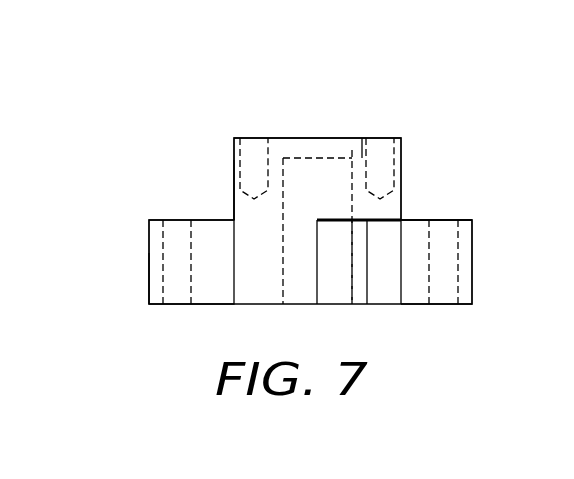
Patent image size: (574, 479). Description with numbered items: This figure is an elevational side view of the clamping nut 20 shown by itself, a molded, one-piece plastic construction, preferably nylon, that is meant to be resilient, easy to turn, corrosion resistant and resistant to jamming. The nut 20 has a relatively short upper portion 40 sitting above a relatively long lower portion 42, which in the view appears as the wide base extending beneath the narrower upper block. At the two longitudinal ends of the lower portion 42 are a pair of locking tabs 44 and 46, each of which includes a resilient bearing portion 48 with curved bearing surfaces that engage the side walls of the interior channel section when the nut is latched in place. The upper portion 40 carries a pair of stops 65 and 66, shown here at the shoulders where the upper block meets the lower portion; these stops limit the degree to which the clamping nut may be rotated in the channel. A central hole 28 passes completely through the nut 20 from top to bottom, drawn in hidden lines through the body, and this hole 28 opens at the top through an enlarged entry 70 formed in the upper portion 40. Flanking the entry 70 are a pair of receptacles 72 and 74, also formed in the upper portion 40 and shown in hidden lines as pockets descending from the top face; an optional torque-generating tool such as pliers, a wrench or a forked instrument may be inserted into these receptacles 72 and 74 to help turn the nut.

The clamping nut 20 is at (256, 104).
The central hole 28 is at (353, 255).
The upper portion 40 is at (402, 142).
The lower portion 42 is at (472, 256).
The locking tab 44 is at (157, 220).
The locking tab 46 is at (471, 221).
The resilient bearing portion 48 is at (149, 253).
The stop 65 is at (234, 160).
The stop 66 is at (402, 194).
The enlarged entry 70 is at (360, 149).
The receptacle 72 is at (387, 138).
The receptacle 74 is at (247, 139).